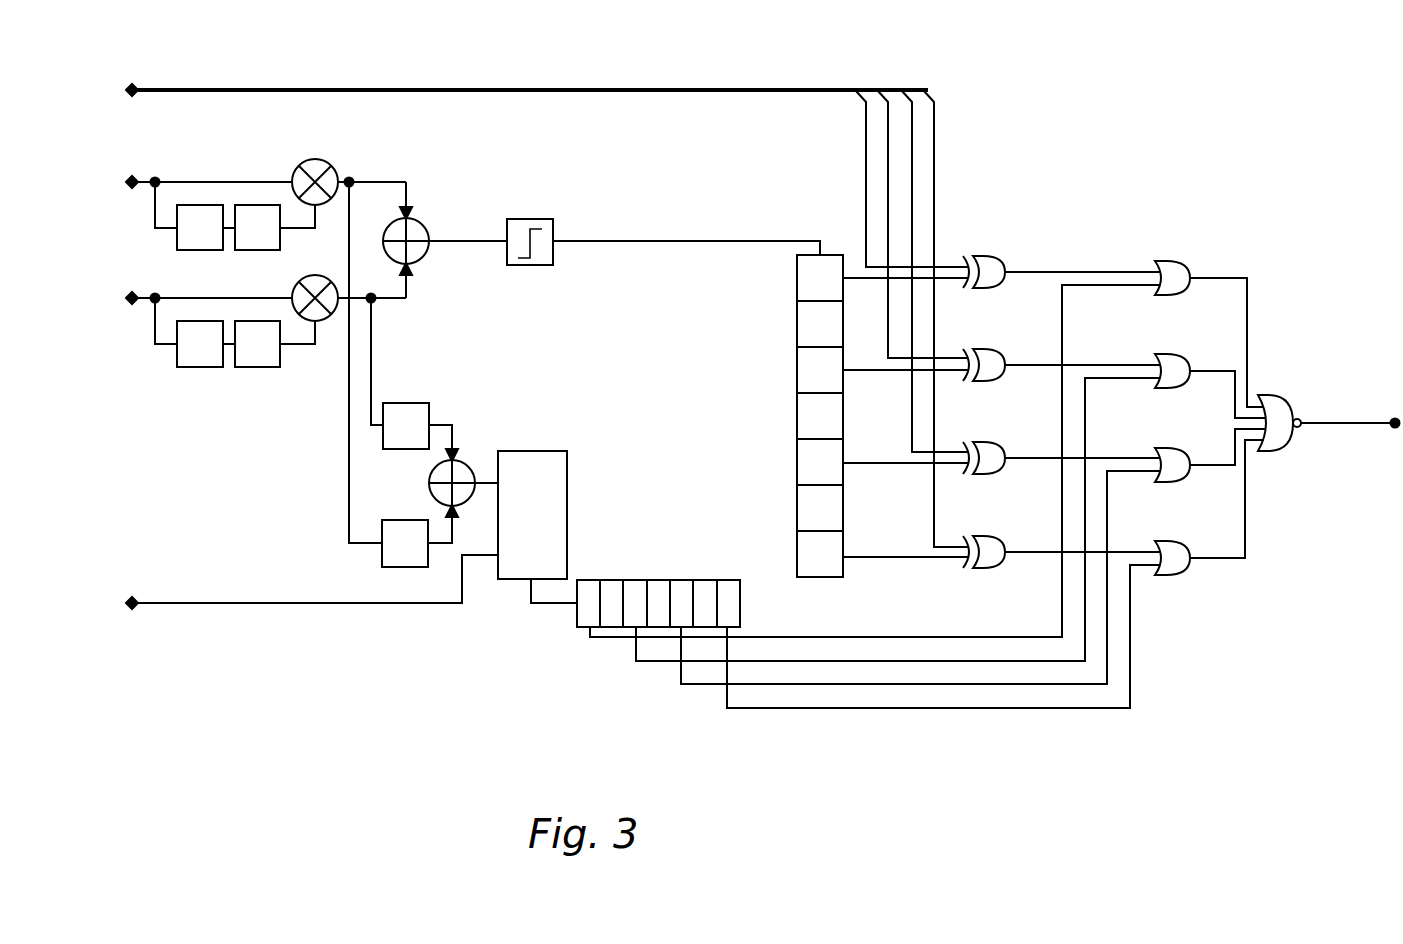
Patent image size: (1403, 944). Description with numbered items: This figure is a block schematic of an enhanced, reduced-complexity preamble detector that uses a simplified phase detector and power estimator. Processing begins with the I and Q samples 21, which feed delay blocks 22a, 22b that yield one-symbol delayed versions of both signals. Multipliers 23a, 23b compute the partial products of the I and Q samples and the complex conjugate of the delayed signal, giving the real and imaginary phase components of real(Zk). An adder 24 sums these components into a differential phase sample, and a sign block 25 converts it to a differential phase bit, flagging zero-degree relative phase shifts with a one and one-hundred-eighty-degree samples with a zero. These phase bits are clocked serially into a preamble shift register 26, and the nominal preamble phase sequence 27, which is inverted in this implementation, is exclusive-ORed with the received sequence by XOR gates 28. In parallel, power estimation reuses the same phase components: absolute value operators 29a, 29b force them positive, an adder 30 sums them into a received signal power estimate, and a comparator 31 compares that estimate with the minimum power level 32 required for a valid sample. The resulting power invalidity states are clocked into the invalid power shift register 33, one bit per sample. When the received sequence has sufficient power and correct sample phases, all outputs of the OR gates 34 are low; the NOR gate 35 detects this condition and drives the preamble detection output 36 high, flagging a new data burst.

The I and Q samples 21 is at (122, 209).
The delay block 22a is at (264, 153).
The delay block 22b is at (238, 272).
The multiplier 23a is at (340, 174).
The multiplier 23b is at (334, 280).
The adder 24 is at (432, 205).
The sign block 25 is at (548, 190).
The preamble shift register 26 is at (834, 217).
The nominal preamble phase sequence 27 is at (184, 80).
The XOR gates 28 is at (1024, 246).
The absolute value operator 29a is at (432, 380).
The absolute value operator 29b is at (406, 520).
The adder 30 is at (496, 437).
The comparator 31 is at (546, 436).
The minimum power level 32 is at (184, 599).
The invalid power shift register 33 is at (741, 563).
The OR gates 34 is at (1208, 252).
The NOR gate 35 is at (1306, 380).
The preamble detection output 36 is at (1395, 400).